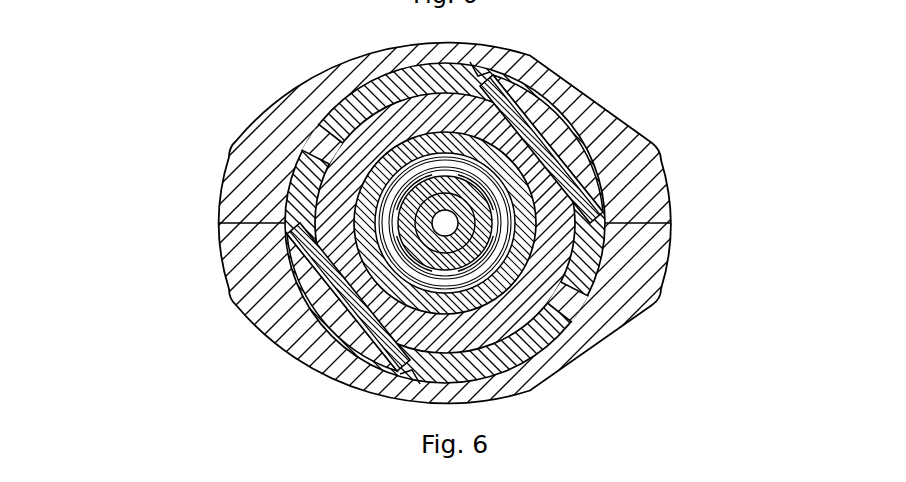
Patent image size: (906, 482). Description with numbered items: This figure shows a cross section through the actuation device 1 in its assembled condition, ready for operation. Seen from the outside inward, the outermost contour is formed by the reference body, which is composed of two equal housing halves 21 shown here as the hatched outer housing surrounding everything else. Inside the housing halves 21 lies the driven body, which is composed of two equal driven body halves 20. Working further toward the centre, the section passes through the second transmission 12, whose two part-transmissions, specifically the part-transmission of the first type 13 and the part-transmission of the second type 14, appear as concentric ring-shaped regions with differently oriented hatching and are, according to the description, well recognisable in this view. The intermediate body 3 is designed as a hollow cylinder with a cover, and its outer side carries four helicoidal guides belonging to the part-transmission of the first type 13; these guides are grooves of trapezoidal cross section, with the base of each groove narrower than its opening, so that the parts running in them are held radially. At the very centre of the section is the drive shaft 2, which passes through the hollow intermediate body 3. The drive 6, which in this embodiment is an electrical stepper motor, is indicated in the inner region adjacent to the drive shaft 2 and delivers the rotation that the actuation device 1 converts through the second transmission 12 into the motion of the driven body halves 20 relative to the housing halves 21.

The actuation device 1 is at (453, 202).
The drive shaft 2 is at (443, 226).
The intermediate body 3 is at (513, 92).
The drive 6 is at (388, 290).
The second transmission 12 is at (453, 191).
The part-transmission of the first type 13 is at (228, 85).
The part-transmission of the second type 14 is at (300, 135).
The driven body halves 20 is at (525, 135).
The housing halves 21 is at (622, 173).